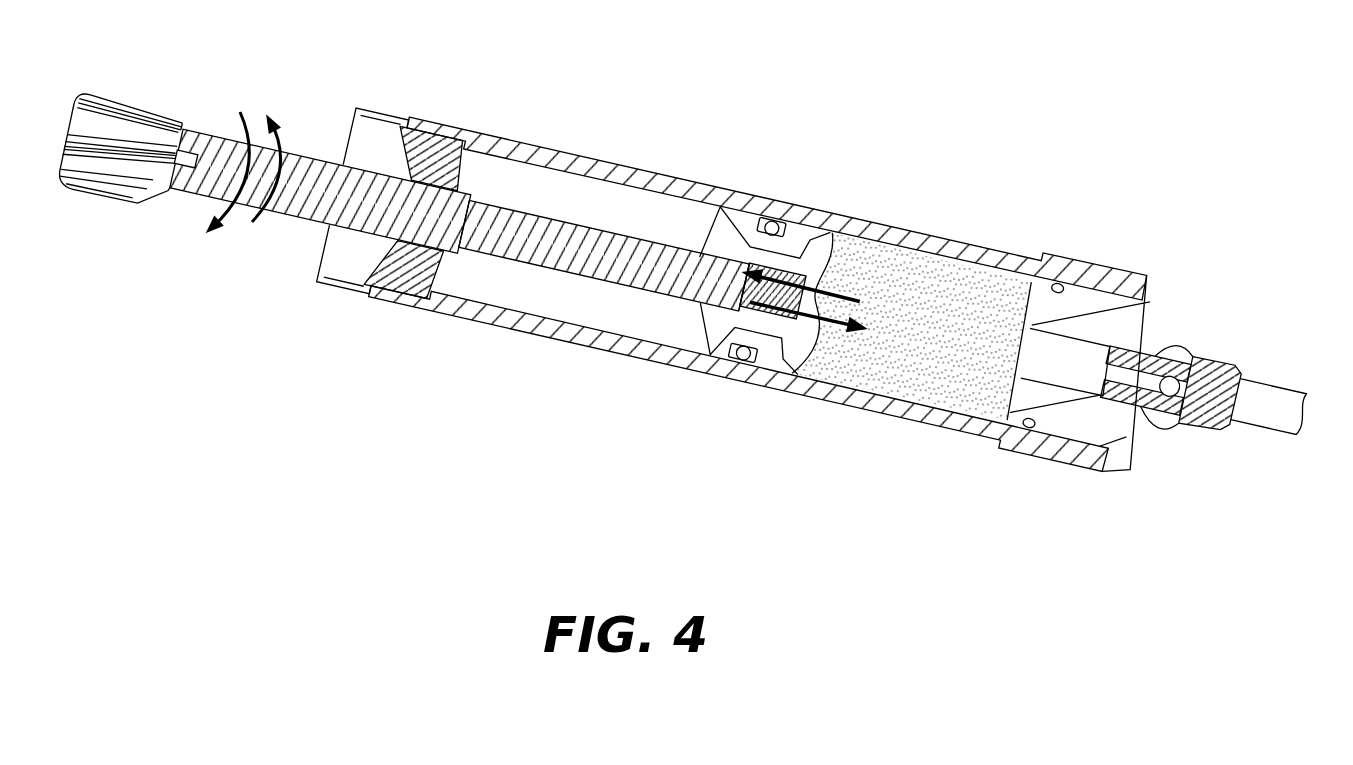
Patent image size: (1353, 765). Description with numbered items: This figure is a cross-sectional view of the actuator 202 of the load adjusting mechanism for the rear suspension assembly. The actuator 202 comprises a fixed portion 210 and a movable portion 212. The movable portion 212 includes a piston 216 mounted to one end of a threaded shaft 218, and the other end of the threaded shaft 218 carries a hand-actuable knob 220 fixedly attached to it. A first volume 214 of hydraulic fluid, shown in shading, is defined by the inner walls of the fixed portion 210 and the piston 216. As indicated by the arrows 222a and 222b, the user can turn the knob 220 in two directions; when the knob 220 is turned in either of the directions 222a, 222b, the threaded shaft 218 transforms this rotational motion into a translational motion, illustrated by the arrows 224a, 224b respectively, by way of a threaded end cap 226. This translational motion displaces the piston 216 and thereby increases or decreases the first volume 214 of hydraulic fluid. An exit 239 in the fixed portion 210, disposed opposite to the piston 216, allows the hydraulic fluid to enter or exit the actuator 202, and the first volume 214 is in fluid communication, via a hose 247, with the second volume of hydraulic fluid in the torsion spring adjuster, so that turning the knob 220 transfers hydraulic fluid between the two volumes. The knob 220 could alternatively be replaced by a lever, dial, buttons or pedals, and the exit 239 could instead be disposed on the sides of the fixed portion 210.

The actuator 202 is at (703, 251).
The fixed portion 210 is at (978, 252).
The movable portion 212 is at (322, 156).
The first volume of hydraulic fluid 214 is at (921, 300).
The piston 216 is at (782, 363).
The threaded shaft 218 is at (570, 262).
The hand-actuable knob 220 is at (107, 216).
The rotation direction arrow 222a is at (243, 122).
The rotation direction arrow 222b is at (250, 222).
The translational motion arrow 224a is at (813, 318).
The translational motion arrow 224b is at (812, 298).
The threaded end cap 226 is at (410, 283).
The exit 239 is at (1147, 377).
The hose 247 is at (1287, 397).